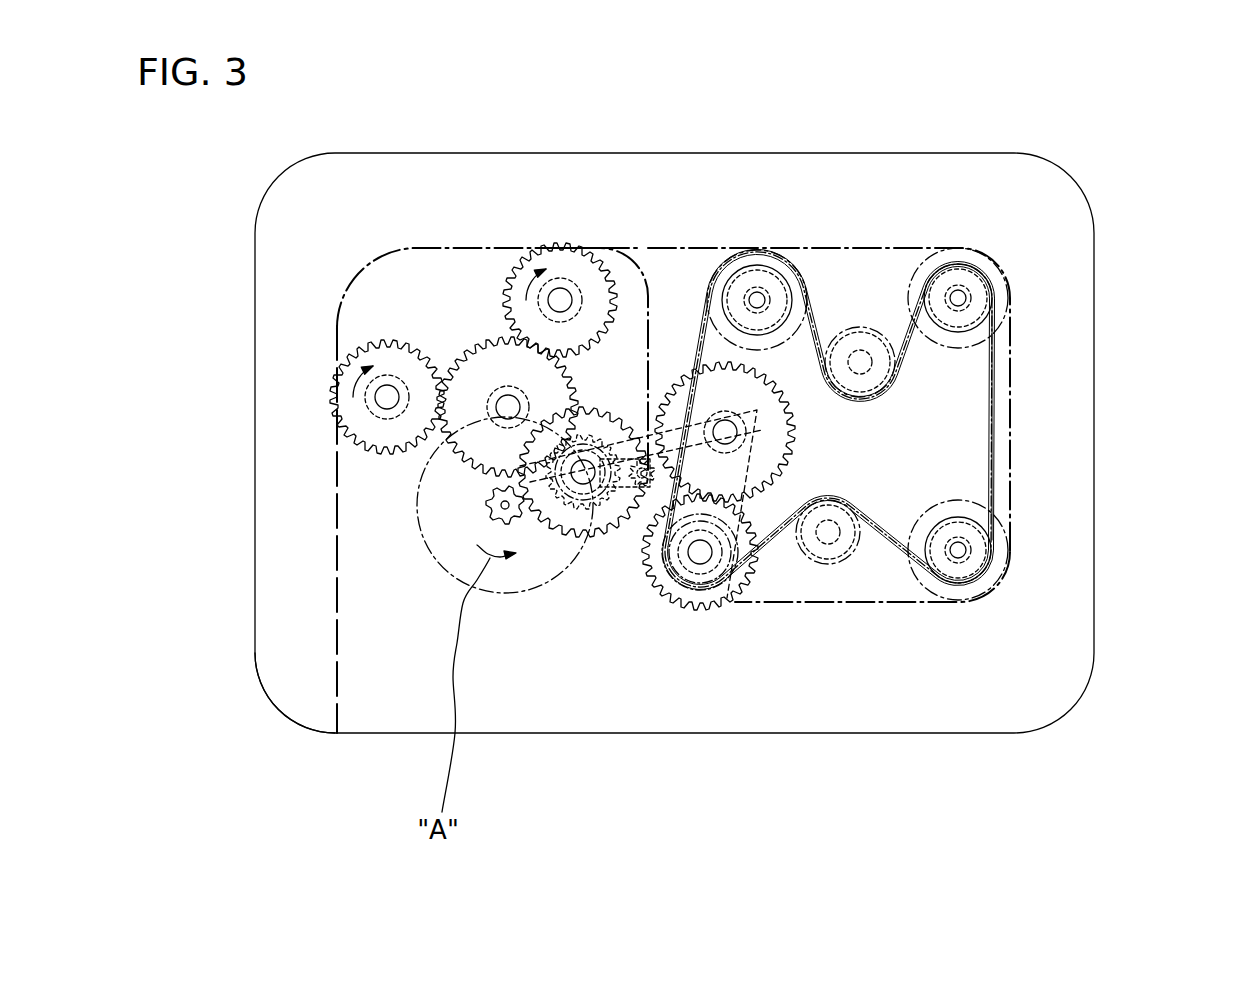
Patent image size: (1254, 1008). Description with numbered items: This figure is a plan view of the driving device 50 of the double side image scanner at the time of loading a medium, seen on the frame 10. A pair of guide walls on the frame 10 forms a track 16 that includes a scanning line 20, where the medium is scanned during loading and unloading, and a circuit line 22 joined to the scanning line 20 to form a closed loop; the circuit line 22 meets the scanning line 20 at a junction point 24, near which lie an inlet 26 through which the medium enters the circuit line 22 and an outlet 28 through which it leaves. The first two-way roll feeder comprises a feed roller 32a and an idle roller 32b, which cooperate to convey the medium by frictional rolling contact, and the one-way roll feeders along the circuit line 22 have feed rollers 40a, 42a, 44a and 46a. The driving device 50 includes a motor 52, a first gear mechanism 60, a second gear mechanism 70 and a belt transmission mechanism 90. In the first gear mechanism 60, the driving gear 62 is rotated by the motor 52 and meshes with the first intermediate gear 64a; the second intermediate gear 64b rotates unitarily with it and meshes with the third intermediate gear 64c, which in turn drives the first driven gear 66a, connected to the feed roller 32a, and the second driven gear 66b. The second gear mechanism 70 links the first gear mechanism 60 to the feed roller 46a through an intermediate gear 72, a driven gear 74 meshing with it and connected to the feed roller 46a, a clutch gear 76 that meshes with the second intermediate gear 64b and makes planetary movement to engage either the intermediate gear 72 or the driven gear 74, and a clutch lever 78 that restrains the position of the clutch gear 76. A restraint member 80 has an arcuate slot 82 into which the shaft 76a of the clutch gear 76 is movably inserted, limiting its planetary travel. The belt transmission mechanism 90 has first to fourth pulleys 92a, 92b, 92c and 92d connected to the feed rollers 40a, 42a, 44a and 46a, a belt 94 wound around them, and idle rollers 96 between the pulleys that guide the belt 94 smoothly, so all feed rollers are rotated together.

The frame 10 is at (1073, 708).
The track 16 is at (326, 640).
The scanning line 20 is at (337, 593).
The circuit line 22 is at (1010, 396).
The junction point 24 is at (560, 247).
The inlet 26 is at (632, 278).
The outlet 28 is at (603, 253).
The feed roller 32a is at (342, 365).
The idle roller 32b is at (528, 253).
The feed roller 40a is at (790, 267).
The feed roller 42a is at (931, 265).
The feed roller 44a is at (930, 590).
The feed roller 46a is at (838, 556).
The driving device 50 is at (447, 579).
The motor 52 is at (497, 595).
The first gear mechanism 60 is at (354, 343).
The driving gear 62 is at (490, 503).
The first intermediate gear 64a is at (565, 530).
The second intermediate gear 64b is at (600, 508).
The third intermediate gear 64c is at (490, 352).
The first driven gear 66a is at (373, 448).
The second driven gear 66b is at (513, 267).
The second gear mechanism 70 is at (738, 600).
The intermediate gear 72 is at (770, 420).
The driven gear 74 is at (684, 605).
The clutch gear 76 is at (703, 432).
The shaft 76a is at (690, 447).
The clutch lever 78 is at (620, 495).
The restraint member 80 is at (679, 397).
The arcuate slot 82 is at (692, 585).
The belt transmission mechanism 90 is at (1000, 360).
The first pulley 92a is at (760, 297).
The second pulley 92b is at (982, 298).
The third pulley 92c is at (982, 550).
The fourth pulley 92d is at (719, 614).
The belt 94 is at (995, 418).
The idle rollers 96 is at (860, 340).